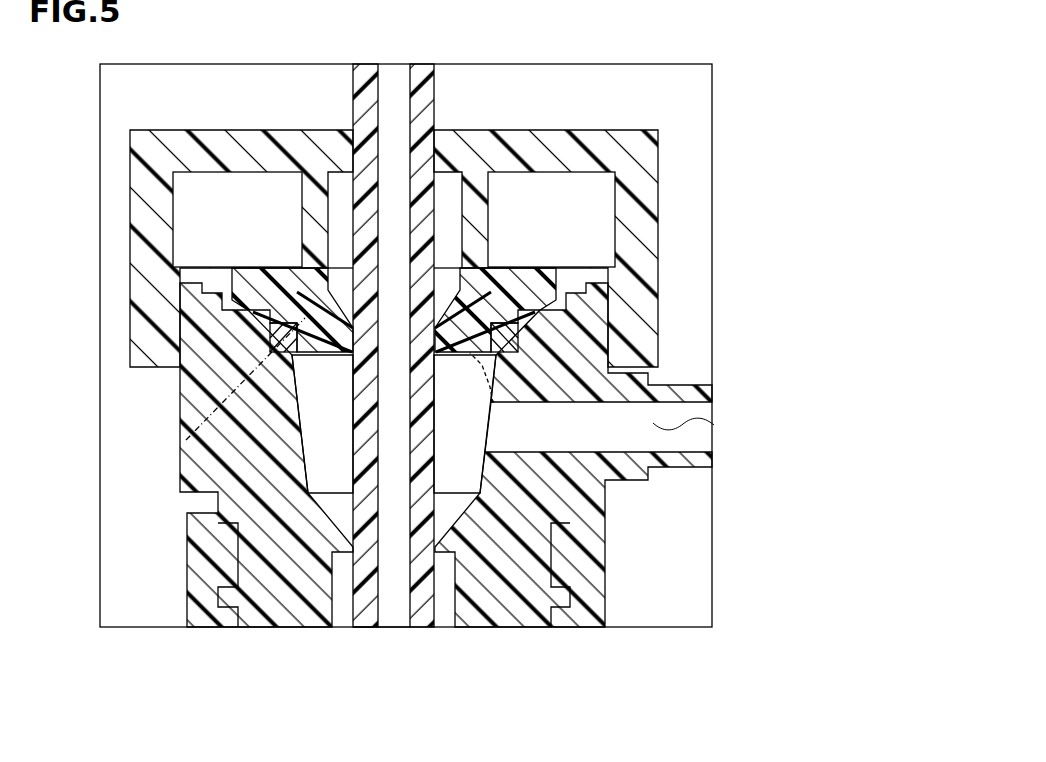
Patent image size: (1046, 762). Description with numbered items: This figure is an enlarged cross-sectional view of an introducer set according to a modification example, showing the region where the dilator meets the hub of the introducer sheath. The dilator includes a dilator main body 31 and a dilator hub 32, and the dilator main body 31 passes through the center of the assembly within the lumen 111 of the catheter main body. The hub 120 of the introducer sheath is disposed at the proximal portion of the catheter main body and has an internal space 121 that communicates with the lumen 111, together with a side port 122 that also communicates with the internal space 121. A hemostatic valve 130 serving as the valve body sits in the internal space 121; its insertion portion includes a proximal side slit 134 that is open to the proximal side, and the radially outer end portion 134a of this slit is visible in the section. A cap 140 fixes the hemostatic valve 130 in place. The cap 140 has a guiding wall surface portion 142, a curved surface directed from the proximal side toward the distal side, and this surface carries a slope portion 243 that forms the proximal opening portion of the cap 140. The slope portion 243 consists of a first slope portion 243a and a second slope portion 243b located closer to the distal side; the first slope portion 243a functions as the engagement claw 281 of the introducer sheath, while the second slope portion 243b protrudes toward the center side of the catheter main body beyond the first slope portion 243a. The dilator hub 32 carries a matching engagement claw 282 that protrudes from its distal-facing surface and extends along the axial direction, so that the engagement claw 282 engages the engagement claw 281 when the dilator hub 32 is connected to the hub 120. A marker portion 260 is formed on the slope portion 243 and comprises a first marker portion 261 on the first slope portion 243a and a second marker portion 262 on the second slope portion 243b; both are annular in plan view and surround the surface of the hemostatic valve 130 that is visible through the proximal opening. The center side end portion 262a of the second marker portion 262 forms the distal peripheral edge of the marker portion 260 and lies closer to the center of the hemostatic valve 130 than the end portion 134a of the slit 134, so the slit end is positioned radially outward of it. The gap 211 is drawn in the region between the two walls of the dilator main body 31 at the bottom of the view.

The dilator main body 31 is at (452, 97).
The dilator hub 32 is at (664, 227).
The lumen 111 is at (353, 628).
The hub 120 is at (178, 421).
The internal space 121 is at (603, 514).
The side port 122 is at (717, 425).
The hemostatic valve 130 is at (339, 366).
The proximal side slit 134 is at (180, 494).
The end portion of the proximal side slit 134a is at (198, 381).
The cap 140 is at (584, 262).
The guiding wall surface portion 142 is at (512, 300).
The gap 211 is at (400, 603).
The slope portion 243 is at (668, 332).
The first slope portion 243a is at (636, 310).
The engagement claw 281 is at (463, 310).
The second slope portion 243b is at (535, 310).
The marker portion 260 is at (250, 213).
The first marker portion 261 is at (297, 290).
The second marker portion 262 is at (262, 290).
The center side end portion 262a is at (493, 403).
The engagement claw 282 is at (483, 236).